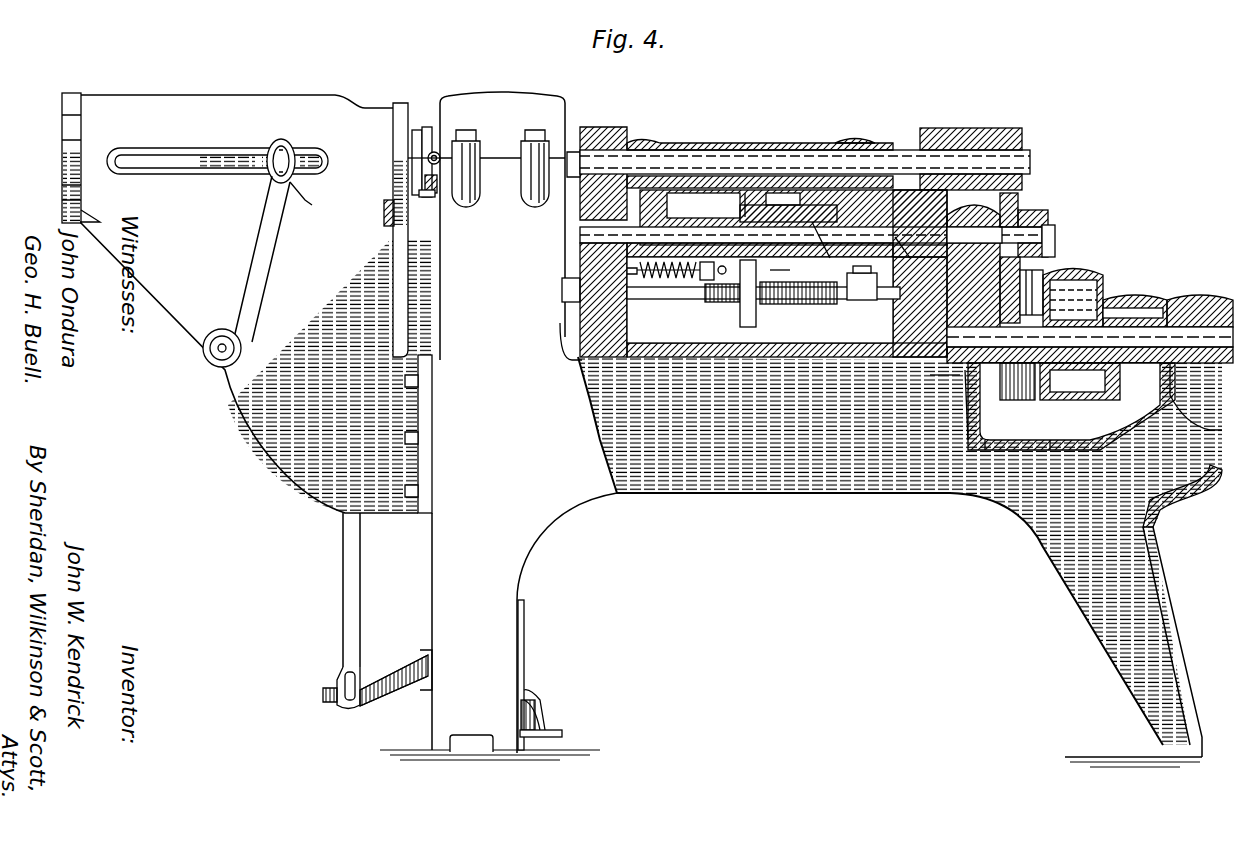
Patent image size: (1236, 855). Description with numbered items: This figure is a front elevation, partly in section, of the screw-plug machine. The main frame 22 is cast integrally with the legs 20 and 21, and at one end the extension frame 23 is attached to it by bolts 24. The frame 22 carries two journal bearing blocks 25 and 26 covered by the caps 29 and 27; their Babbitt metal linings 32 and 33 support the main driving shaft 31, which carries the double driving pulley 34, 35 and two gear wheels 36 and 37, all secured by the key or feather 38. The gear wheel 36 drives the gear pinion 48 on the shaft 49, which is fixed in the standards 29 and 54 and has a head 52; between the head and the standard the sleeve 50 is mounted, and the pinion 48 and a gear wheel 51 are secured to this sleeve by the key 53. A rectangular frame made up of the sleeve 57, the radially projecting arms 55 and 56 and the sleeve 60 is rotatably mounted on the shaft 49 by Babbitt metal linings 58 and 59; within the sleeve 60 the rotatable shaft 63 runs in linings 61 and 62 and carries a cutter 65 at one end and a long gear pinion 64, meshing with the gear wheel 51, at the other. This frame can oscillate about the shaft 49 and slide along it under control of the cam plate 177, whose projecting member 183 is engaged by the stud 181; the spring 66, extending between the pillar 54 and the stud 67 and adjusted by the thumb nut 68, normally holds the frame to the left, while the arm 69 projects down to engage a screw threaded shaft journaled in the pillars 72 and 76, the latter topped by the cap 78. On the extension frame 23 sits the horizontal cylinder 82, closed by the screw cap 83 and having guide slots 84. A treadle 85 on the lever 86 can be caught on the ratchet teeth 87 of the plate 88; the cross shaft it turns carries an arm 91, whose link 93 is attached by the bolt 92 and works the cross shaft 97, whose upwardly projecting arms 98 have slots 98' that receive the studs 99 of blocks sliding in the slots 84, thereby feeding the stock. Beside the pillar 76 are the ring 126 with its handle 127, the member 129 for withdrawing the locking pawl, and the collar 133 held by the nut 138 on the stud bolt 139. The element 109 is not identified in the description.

The leg 20 is at (1125, 662).
The leg 21 is at (498, 626).
The main frame 22 is at (900, 551).
The extension frame 23 is at (256, 367).
The bolts 24 is at (405, 437).
The journal bearing block 25 is at (912, 388).
The journal bearing block 26 is at (1205, 480).
The cap 27 is at (1180, 300).
The cap 29 is at (955, 270).
The shaft 31 is at (1195, 325).
The Babbitt metal lining 32 is at (1193, 403).
The Babbitt metal lining 33 is at (965, 395).
The double driving pulley 34 is at (1090, 268).
The double driving pulley 35 is at (1130, 298).
The gear wheel 36 is at (1070, 450).
The gear wheel 37 is at (1000, 452).
The key or feather 38 is at (1120, 410).
The gear pinion 48 is at (1030, 212).
The shaft 49 is at (903, 257).
The sleeve 50 is at (1020, 210).
The gear wheel 51 is at (1012, 193).
The head 52 is at (1056, 240).
The key 53 is at (1040, 240).
The standard 54 is at (592, 262).
The radially projecting arm 55 is at (900, 206).
The radially projecting arm 56 is at (695, 190).
The sleeve 57 is at (785, 268).
The Babbitt metal lining 58 is at (912, 225).
The Babbitt metal lining 59 is at (703, 204).
The sleeve 60 is at (775, 135).
The Babbitt metal lining 61 is at (862, 142).
The Babbitt metal lining 62 is at (642, 142).
The rotatable shaft 63 is at (785, 200).
The long gear pinion 64 is at (950, 118).
The cutter 65 is at (600, 128).
The spring 66 is at (660, 282).
The stud 67 is at (710, 282).
The thumb nut 68 is at (725, 302).
The arm 69 is at (756, 300).
The pillar 72 is at (860, 302).
The pillar 76 is at (548, 293).
The cap 78 is at (525, 108).
The horizontal cylinder 82 is at (235, 92).
The screw cap 83 is at (62, 215).
The horizontal guide slots 84 is at (155, 148).
The treadle 85 is at (562, 727).
The lever 86 is at (548, 680).
The ratchet teeth 87 is at (533, 760).
The plate 88 is at (524, 638).
The arm 91 is at (390, 670).
The bolt 92 is at (323, 697).
The link 93 is at (360, 548).
The cross shaft 97 is at (205, 360).
The upwardly projecting arms 98 is at (266, 259).
The slots 98' is at (311, 206).
The stud 99 is at (283, 139).
The block 109 is at (384, 225).
The ring 126 is at (428, 127).
The handle 127 is at (440, 155).
The member 129 is at (395, 140).
The collar 133 is at (418, 195).
The nut 138 is at (435, 197).
The stud bolts 139 is at (437, 185).
The cam plate 177 is at (831, 253).
The stud 181 is at (740, 195).
The projecting member 183 is at (795, 197).